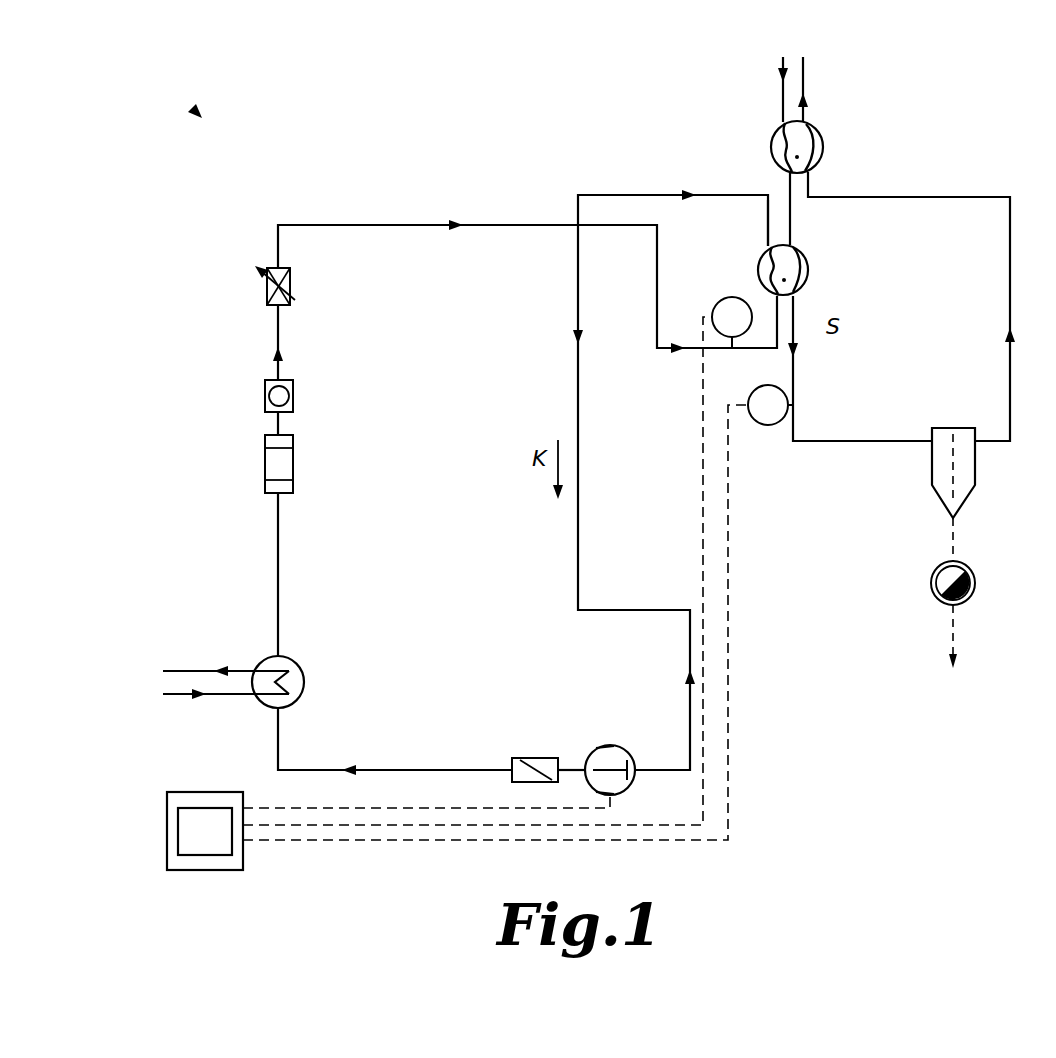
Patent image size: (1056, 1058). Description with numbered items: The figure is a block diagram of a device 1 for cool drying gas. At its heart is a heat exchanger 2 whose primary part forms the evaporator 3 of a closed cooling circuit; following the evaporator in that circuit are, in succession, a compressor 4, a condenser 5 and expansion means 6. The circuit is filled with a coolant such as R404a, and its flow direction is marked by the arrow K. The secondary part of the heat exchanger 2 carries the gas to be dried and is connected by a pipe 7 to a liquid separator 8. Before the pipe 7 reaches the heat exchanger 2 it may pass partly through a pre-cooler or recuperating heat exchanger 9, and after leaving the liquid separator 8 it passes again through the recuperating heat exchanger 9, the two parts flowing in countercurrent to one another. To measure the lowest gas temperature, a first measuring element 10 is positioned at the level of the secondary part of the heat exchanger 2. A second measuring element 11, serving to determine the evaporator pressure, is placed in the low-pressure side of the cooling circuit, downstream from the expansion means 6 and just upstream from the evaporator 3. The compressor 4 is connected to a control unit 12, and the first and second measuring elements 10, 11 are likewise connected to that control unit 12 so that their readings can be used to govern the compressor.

The device for cool drying 1 is at (200, 116).
The heat exchanger 2 is at (804, 265).
The evaporator 3 is at (764, 258).
The compressor 4 is at (607, 745).
The condenser 5 is at (298, 660).
The expansion means 6 is at (265, 270).
The pipe 7 is at (852, 446).
The liquid separator 8 is at (962, 492).
The recuperating heat exchanger 9 is at (818, 136).
The first measuring element 10 is at (760, 440).
The second measuring element 11 is at (720, 302).
The control unit 12 is at (167, 826).